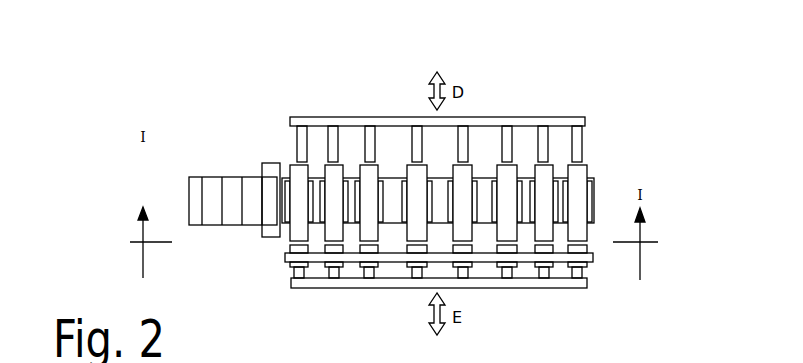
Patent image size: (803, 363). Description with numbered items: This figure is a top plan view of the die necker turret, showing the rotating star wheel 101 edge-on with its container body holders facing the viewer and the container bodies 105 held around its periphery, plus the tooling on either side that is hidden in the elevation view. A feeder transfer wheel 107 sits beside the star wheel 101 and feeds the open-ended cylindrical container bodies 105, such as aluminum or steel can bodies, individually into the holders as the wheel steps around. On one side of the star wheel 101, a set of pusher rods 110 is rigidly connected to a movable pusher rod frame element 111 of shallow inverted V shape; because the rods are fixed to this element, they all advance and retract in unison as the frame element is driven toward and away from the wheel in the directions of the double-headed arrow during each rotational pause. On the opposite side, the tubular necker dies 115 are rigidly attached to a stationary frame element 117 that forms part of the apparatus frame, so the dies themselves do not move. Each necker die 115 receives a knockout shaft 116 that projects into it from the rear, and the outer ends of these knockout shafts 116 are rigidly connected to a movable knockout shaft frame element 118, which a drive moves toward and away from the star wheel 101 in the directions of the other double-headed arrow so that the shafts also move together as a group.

The star wheel 101 is at (595, 217).
The container body 105 is at (273, 163).
The feeder transfer wheel 107 is at (213, 185).
The pusher rod 110 is at (296, 158).
The pusher rod frame element 111 is at (497, 122).
The tubular necker die 115 is at (287, 247).
The knockout shaft 116 is at (285, 270).
The stationary frame element 117 is at (285, 258).
The knockout shaft frame element 118 is at (305, 288).